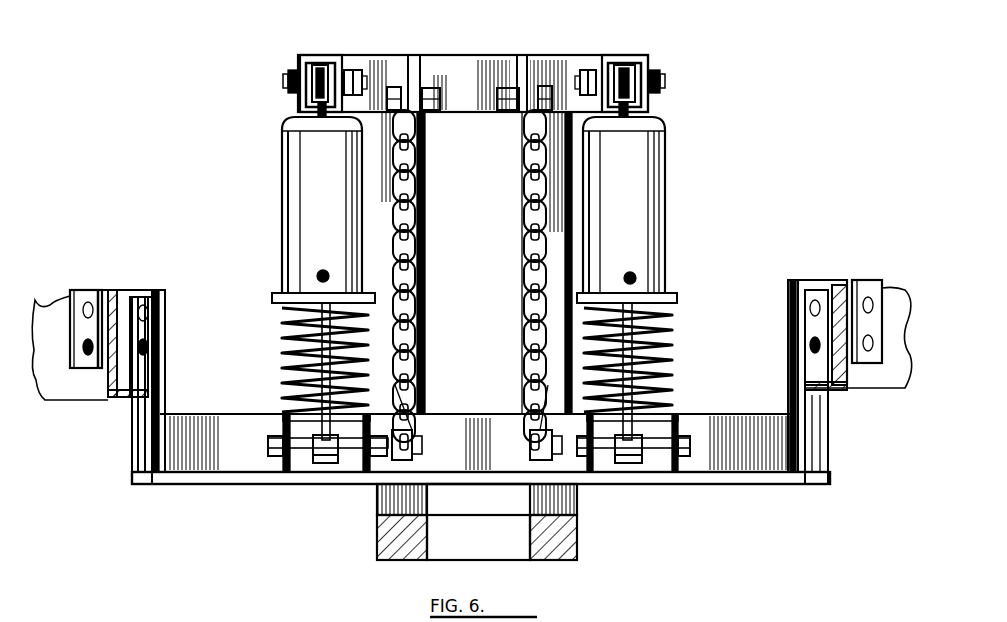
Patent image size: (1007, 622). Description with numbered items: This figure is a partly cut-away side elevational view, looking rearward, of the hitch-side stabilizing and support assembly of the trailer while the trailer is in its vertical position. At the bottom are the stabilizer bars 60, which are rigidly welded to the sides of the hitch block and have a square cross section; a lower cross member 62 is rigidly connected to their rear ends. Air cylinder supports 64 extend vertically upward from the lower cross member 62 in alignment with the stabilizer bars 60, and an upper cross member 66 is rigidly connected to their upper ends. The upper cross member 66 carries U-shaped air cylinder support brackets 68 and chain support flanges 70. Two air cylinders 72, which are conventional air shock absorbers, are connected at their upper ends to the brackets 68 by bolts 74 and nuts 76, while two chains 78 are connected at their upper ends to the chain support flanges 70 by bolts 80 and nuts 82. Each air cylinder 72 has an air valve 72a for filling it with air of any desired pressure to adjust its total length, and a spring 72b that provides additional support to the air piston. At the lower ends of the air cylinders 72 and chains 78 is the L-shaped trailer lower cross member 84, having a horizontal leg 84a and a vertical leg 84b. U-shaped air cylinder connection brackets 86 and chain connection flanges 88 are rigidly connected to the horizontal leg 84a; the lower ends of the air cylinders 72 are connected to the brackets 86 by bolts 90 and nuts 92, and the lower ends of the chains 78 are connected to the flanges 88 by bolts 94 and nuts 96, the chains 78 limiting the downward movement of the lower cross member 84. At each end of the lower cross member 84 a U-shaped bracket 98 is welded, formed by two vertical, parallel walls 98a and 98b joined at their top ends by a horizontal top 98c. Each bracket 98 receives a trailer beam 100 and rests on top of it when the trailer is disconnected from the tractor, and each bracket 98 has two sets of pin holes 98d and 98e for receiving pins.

The stabilizer bars 60 is at (388, 535).
The lower cross member 62 is at (496, 546).
The air cylinder supports 64 is at (390, 496).
The upper cross member 66 is at (473, 55).
The U-shaped air cylinder support brackets 68 is at (298, 66).
The chain support flanges 70 is at (415, 58).
The air cylinders 72 is at (282, 232).
The air valves 72a is at (323, 270).
The springs 72b is at (285, 372).
The bolts 74 is at (289, 82).
The nuts 76 is at (352, 70).
The chains 78 is at (426, 185).
The bolts 80 is at (394, 88).
The nuts 82 is at (433, 110).
The trailer lower cross member 84 is at (484, 414).
The horizontal leg 84a is at (232, 486).
The vertical leg 84b is at (208, 432).
The U-shaped air cylinder connection brackets 86 is at (285, 440).
The chain connection flanges 88 is at (478, 499).
The bolts 90 is at (275, 450).
The nuts 92 is at (332, 463).
The bolts 94 is at (412, 385).
The nuts 96 is at (405, 430).
The U-shaped brackets 98 is at (168, 304).
The vertical wall 98a is at (148, 345).
The vertical wall 98b is at (58, 370).
The horizontal top 98c is at (113, 290).
The pin holes 98d is at (88, 305).
The pin holes 98e is at (145, 352).
The trailer beams 100 is at (135, 440).